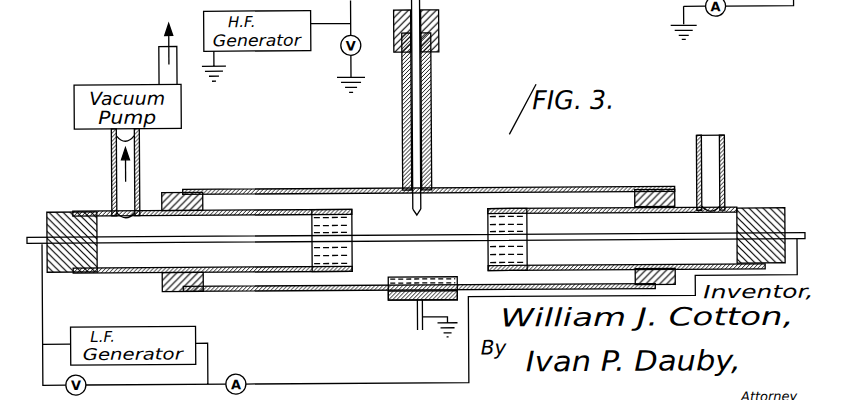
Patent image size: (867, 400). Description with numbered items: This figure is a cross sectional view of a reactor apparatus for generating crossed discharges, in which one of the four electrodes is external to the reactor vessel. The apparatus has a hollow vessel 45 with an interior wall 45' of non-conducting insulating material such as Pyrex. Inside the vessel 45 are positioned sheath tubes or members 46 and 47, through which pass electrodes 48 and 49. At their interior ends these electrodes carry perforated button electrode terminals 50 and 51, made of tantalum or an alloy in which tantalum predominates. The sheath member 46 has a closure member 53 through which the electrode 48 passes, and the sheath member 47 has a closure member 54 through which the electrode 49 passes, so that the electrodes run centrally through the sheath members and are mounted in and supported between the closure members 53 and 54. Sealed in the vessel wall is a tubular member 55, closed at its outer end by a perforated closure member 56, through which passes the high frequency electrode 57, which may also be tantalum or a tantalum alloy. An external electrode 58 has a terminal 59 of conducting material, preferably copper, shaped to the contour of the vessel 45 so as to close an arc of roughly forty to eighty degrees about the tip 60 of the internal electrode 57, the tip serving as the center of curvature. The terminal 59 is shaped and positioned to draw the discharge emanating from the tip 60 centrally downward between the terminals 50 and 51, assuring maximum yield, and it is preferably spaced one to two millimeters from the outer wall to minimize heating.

The hollow vessel 45 is at (428, 222).
The interior wall 45' is at (222, 182).
The sheath tube 46 is at (233, 275).
The sheath tube 47 is at (573, 180).
The electrode 48 is at (143, 242).
The electrode 49 is at (605, 238).
The perforated button electrode terminal 50 is at (312, 247).
The perforated button electrode terminal 51 is at (488, 221).
The closure member 53 is at (58, 272).
The closure member 54 is at (773, 207).
The tubular member 55 is at (434, 76).
The closure member 56 is at (441, 30).
The high frequency electrode 57 is at (422, 118).
The external electrode 58 is at (417, 324).
The electrode terminal 59 is at (388, 300).
The tip 60 is at (415, 214).